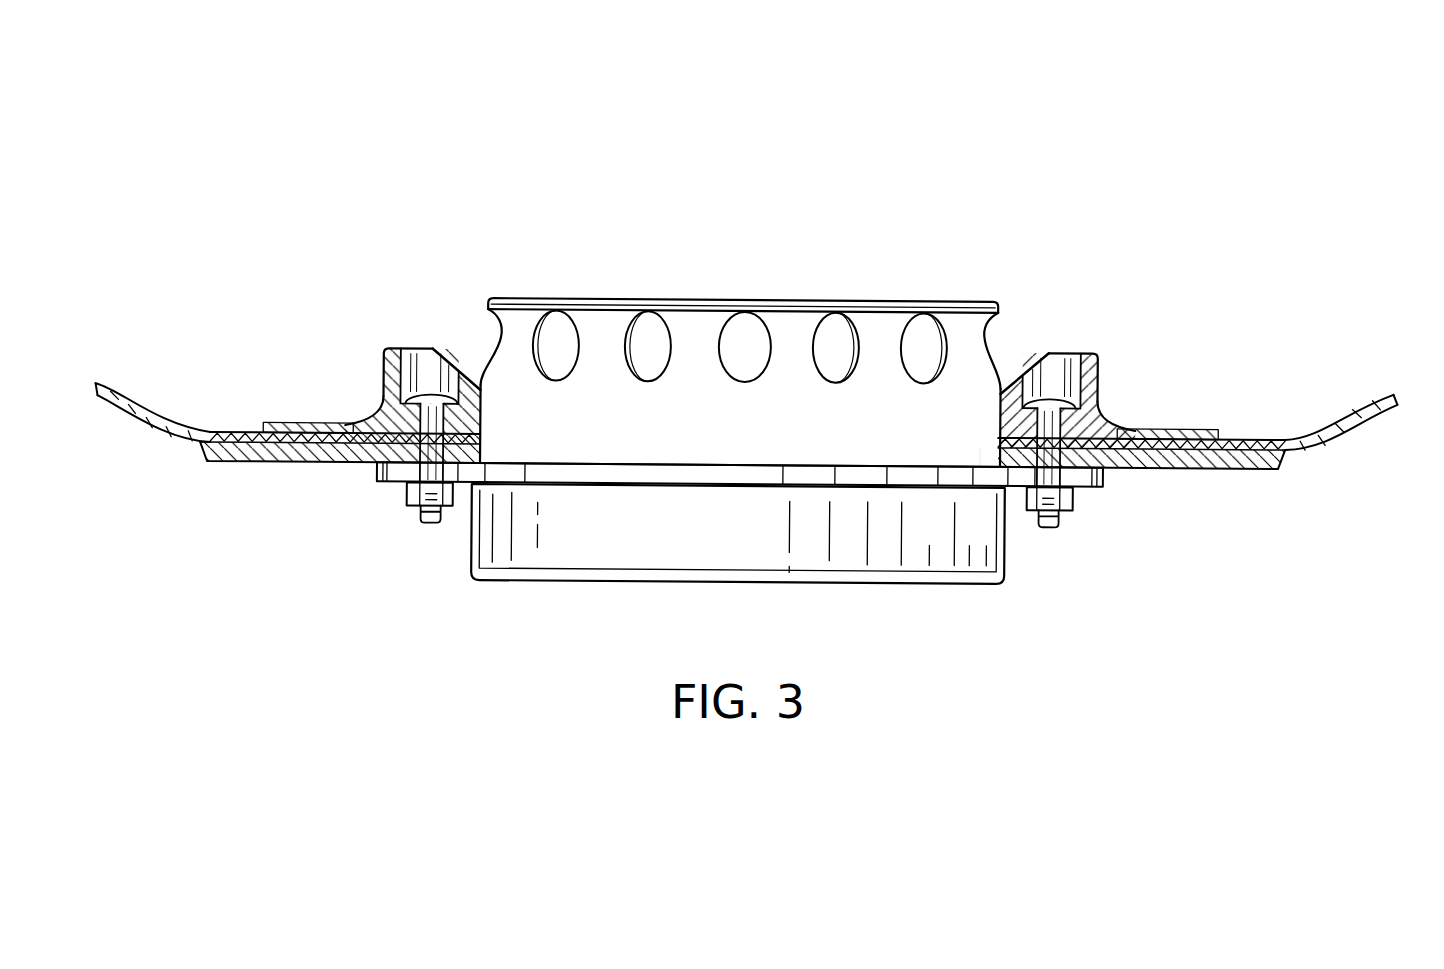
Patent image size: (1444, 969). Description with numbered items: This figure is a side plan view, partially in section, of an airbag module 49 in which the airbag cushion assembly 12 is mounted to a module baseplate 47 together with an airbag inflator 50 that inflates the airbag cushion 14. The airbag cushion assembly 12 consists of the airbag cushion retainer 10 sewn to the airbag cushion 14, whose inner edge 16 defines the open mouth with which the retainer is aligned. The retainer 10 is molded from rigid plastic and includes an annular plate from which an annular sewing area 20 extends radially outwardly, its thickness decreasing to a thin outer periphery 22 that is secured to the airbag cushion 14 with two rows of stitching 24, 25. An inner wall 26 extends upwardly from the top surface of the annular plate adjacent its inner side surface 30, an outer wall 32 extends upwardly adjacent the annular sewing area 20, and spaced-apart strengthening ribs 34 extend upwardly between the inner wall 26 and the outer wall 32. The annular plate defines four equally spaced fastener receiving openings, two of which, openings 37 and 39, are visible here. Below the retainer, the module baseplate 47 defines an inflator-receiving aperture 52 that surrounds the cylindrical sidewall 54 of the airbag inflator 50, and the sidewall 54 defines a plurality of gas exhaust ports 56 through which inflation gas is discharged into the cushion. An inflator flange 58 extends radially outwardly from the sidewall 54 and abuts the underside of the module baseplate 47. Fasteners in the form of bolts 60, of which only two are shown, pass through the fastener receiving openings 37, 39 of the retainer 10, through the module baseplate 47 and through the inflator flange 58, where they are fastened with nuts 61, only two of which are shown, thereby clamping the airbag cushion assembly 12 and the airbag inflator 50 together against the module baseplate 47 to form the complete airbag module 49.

The airbag cushion retainer 10 is at (1088, 337).
The airbag cushion assembly 12 is at (761, 381).
The airbag cushion 14 is at (1358, 393).
The inner edge 16 is at (997, 438).
The annular sewing area 20 is at (372, 418).
The outer periphery 22 is at (268, 422).
The row of stitching 24 is at (752, 421).
The row of stitching 25 is at (298, 422).
The inner wall 26 is at (460, 345).
The inner side surface 30 is at (998, 426).
The outer wall 32 is at (388, 348).
The strengthening ribs 34 is at (466, 376).
The fastener receiving opening 37 is at (1094, 480).
The fastener receiving opening 39 is at (330, 454).
The module baseplate 47 is at (1253, 472).
The airbag module 49 is at (1195, 156).
The airbag inflator 50 is at (738, 346).
The inflator-receiving aperture 52 is at (997, 467).
The cylindrical sidewall 54 is at (738, 512).
The gas exhaust ports 56 is at (717, 367).
The inflator flange 58 is at (729, 504).
The bolts 60 is at (474, 412).
The nuts 61 is at (412, 505).